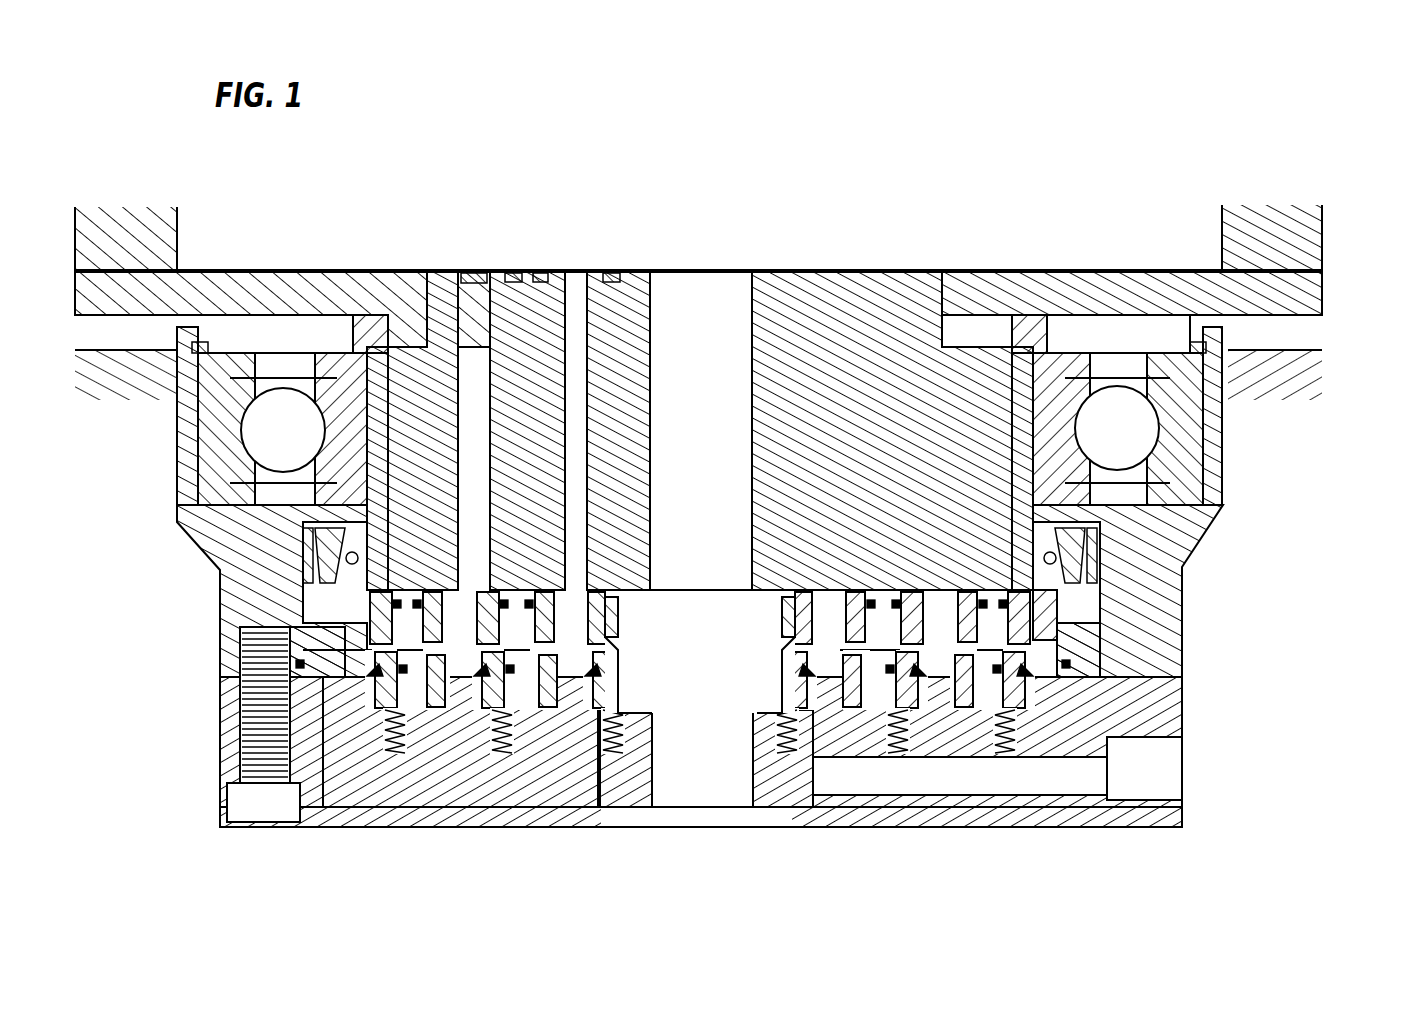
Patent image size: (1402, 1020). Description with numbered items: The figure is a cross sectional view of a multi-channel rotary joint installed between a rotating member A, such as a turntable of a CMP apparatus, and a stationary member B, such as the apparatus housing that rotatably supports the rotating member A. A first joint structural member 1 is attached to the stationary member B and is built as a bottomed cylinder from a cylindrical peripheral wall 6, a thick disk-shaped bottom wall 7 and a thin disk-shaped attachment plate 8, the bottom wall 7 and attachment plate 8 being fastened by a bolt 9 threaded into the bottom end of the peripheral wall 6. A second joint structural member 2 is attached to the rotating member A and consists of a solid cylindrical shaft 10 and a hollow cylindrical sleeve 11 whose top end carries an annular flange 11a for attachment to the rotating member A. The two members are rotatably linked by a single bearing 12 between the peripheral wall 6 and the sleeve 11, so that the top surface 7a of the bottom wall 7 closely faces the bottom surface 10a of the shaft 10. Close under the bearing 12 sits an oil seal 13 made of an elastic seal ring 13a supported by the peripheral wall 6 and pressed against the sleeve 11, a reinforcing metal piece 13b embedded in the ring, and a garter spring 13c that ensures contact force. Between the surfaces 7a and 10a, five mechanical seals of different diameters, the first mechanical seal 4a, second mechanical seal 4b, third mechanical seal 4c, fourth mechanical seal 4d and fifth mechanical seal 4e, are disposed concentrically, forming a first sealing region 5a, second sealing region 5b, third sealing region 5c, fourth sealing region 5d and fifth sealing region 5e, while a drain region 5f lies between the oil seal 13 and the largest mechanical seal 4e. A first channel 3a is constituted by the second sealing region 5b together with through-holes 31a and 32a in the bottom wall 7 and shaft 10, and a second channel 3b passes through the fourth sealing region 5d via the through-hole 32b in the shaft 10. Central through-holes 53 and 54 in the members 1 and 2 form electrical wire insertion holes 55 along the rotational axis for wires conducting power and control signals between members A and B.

The first joint structural member 1 is at (1185, 713).
The second joint structural member 2 is at (280, 270).
The first channel 3a is at (578, 337).
The second channel 3b is at (484, 333).
The through-hole 32a is at (573, 292).
The through-hole 32b is at (466, 292).
The through-hole 54 is at (652, 317).
The electrical wire insertion hole 55 is at (728, 318).
The third sealing region 5c is at (882, 600).
The shaft 10 is at (1020, 372).
The sleeve 11 is at (1048, 352).
The annular flange 11a is at (1300, 300).
The rotating member A is at (1320, 252).
The stationary member B is at (1300, 372).
The bearing 12 is at (215, 438).
The peripheral wall 6 is at (177, 480).
The oil seal 13 is at (320, 556).
The drain region 5f is at (327, 612).
The seal ring 13a is at (1100, 542).
The reinforcing metal piece 13b is at (1075, 570).
The garter spring 13c is at (1052, 572).
The bottom surface of the shaft 10a is at (1058, 622).
The top surface of the bottom wall 7a is at (1087, 637).
The bolt 9 is at (260, 814).
The fifth mechanical seal 4e is at (323, 760).
The fourth mechanical seal 4d is at (370, 742).
The third mechanical seal 4c is at (433, 742).
The second mechanical seal 4b is at (583, 742).
The first mechanical seal 4a is at (660, 765).
The attachment plate 8 is at (475, 810).
The bottom wall 7 is at (605, 782).
The first sealing region 5a is at (727, 706).
The through-hole 53 is at (757, 732).
The second sealing region 5b is at (820, 742).
The through-hole 31a is at (870, 777).
The fourth sealing region 5d is at (930, 748).
The fifth sealing region 5e is at (1000, 748).